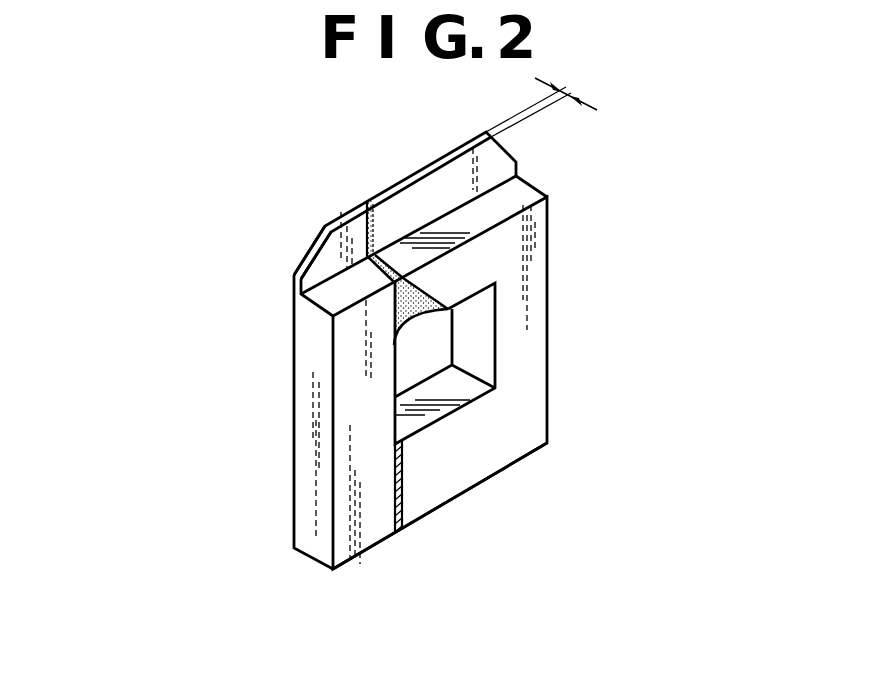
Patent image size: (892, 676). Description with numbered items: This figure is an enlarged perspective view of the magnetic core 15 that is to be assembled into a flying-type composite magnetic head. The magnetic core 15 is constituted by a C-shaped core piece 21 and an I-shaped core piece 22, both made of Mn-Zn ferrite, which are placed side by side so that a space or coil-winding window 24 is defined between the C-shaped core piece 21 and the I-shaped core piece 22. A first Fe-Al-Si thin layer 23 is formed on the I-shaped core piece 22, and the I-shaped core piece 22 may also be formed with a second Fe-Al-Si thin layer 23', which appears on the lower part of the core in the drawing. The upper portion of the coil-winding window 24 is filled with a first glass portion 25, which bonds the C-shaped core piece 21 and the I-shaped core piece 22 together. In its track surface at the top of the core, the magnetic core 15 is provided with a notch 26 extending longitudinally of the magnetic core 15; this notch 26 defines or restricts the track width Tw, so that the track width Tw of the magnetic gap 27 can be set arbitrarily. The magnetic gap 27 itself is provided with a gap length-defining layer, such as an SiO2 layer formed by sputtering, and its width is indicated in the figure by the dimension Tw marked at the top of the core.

The magnetic core 15 is at (289, 228).
The C-shaped core piece 21 is at (547, 242).
The I-shaped core piece 22 is at (360, 547).
The first Fe-Al-Si thin layer 23 is at (383, 196).
The second Fe-Al-Si thin layer 23' is at (453, 496).
The coil-winding window 24 is at (444, 336).
The first glass portion 25 is at (425, 279).
The notch 26 is at (526, 197).
The magnetic gap 27 is at (368, 224).
The track width Tw is at (574, 84).